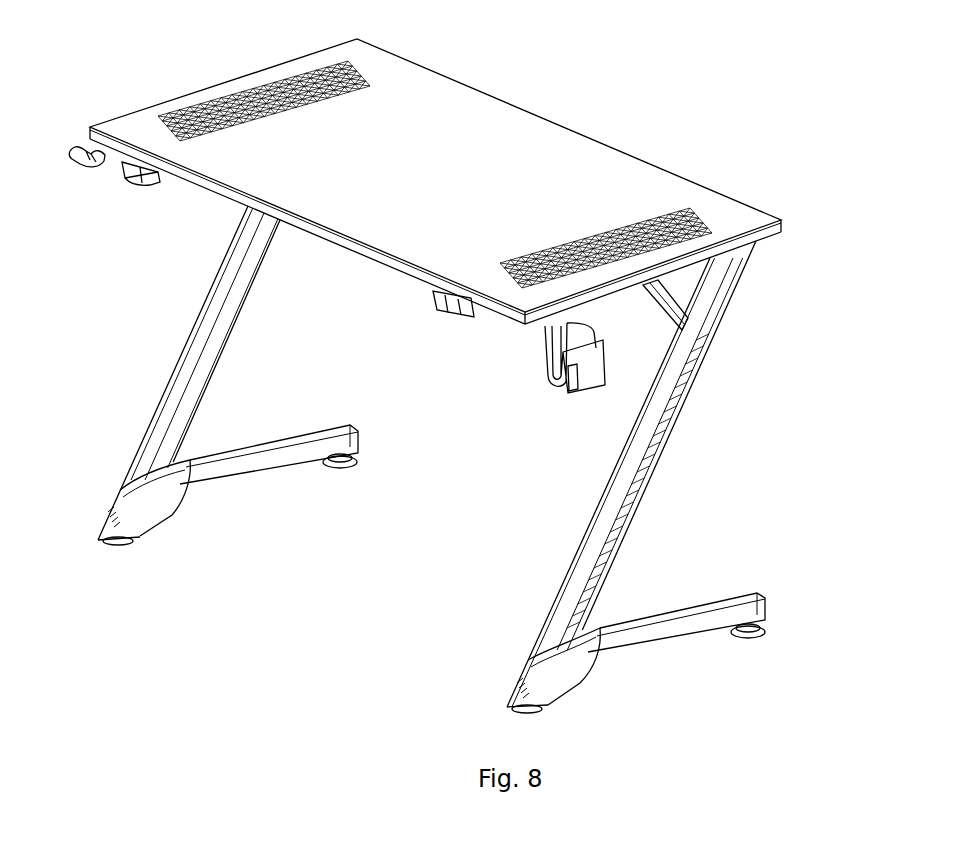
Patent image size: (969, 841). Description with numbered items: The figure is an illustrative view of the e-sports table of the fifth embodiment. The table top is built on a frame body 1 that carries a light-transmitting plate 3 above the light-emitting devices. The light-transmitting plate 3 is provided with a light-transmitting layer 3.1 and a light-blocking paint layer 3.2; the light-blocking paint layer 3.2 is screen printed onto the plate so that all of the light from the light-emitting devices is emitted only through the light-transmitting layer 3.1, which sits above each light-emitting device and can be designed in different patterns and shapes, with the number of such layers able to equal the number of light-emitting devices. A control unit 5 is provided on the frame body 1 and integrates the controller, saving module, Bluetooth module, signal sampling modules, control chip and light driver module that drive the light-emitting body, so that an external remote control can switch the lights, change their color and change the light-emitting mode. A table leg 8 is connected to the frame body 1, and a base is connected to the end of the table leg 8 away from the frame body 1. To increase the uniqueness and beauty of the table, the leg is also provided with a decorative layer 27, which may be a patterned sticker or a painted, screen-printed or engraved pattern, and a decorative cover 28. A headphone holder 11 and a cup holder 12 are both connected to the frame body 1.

The frame body 1 is at (446, 361).
The light-transmitting plate 3 is at (486, 167).
The light-transmitting layer 3.1 is at (357, 72).
The light-blocking paint layer 3.2 is at (495, 127).
The control unit 5 is at (437, 302).
The table leg 8 is at (190, 380).
The headphone holder 11 is at (75, 150).
The cup holder 12 is at (585, 383).
The decorative layer 27 is at (625, 520).
The decorative cover 28 is at (147, 510).